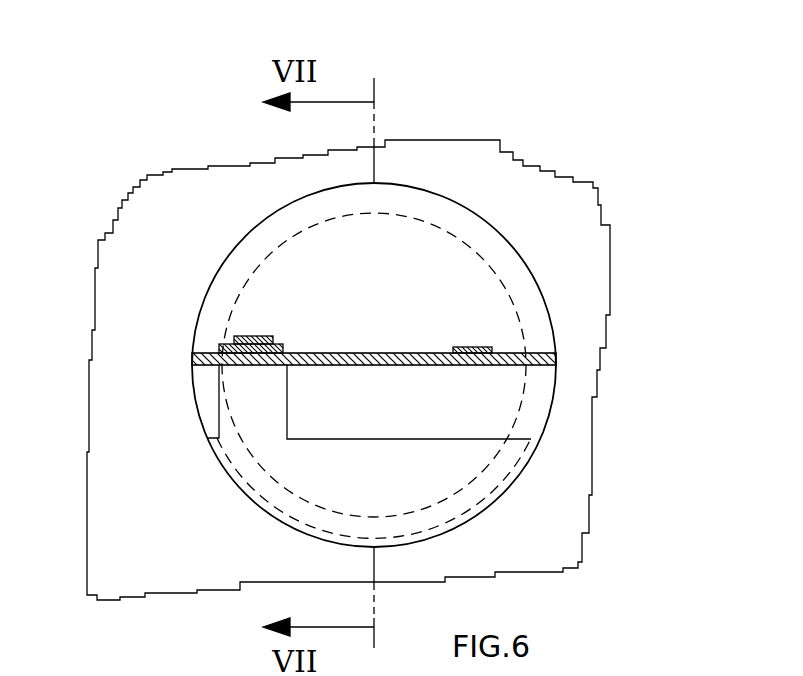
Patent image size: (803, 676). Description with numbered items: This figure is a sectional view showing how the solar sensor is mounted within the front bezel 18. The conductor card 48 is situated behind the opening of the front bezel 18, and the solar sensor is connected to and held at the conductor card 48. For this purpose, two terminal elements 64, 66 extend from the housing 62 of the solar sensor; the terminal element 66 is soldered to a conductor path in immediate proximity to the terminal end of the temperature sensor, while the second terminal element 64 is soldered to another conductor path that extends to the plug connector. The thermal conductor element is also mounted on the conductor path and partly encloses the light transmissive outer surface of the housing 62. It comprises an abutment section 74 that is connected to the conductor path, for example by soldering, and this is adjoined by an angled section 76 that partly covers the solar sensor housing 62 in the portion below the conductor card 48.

The front bezel 18 is at (562, 505).
The housing of the solar sensor 62 is at (445, 280).
The second terminal element 64 is at (477, 347).
The terminal element 66 is at (250, 336).
The abutment section 74 is at (285, 344).
The conductor card 48 is at (430, 366).
The angled section 76 is at (288, 467).